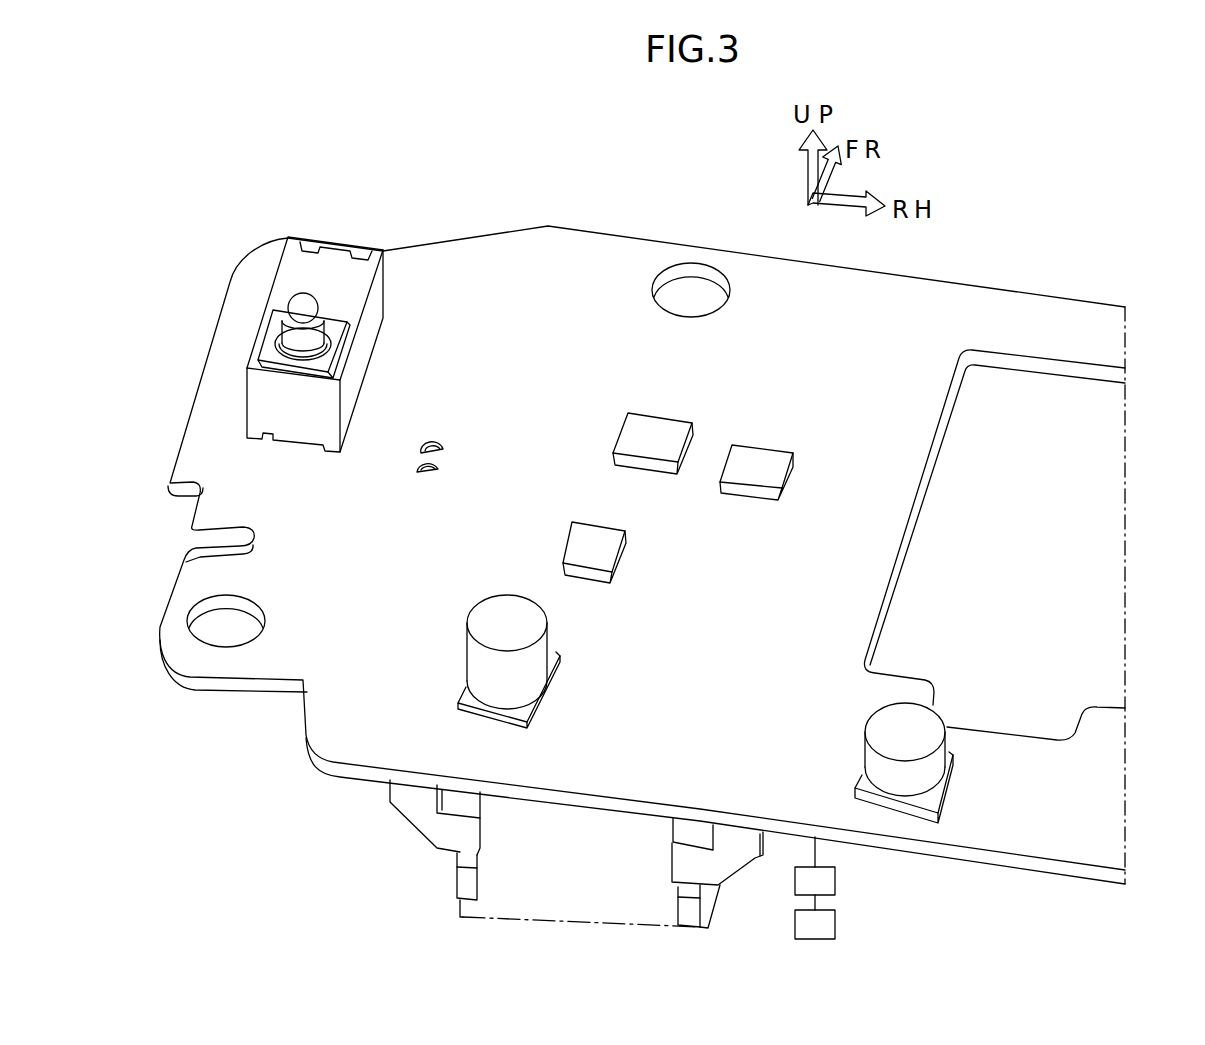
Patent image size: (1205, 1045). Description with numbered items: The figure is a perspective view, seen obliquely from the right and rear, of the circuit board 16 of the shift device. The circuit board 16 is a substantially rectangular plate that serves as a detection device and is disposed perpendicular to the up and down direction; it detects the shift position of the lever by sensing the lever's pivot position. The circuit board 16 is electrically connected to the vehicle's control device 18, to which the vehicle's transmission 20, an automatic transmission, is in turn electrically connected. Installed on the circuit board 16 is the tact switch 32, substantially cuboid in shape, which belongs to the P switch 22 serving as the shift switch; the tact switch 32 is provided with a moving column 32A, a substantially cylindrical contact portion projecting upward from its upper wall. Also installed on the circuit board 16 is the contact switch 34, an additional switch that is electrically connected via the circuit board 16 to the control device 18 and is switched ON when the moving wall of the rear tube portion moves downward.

The circuit board 16 is at (1015, 296).
The control device 18 is at (835, 880).
The transmission 20 is at (835, 925).
The P switch 22 is at (291, 344).
The tact switch 32 is at (276, 282).
The moving column 32A is at (313, 305).
The contact switch 34 is at (458, 444).